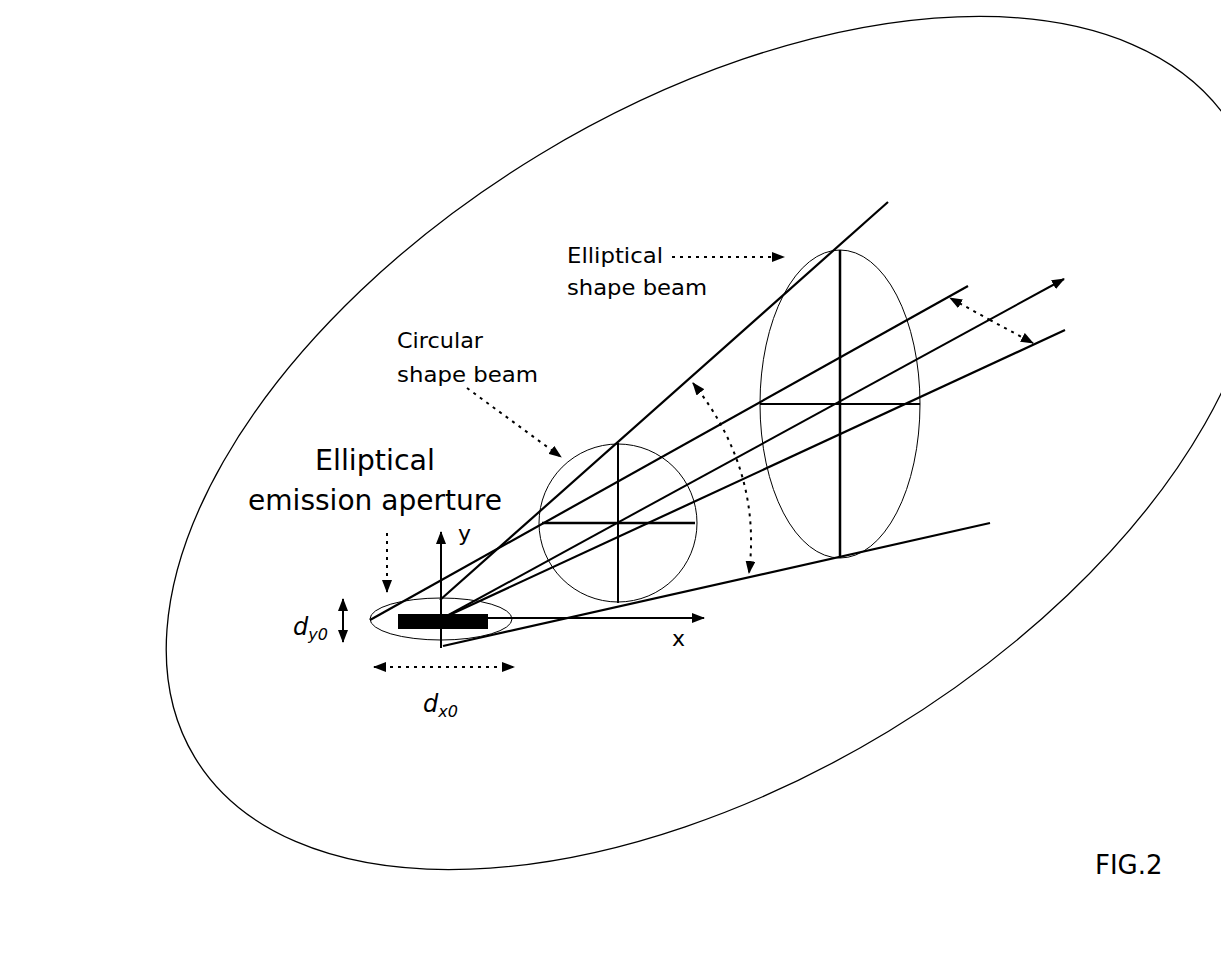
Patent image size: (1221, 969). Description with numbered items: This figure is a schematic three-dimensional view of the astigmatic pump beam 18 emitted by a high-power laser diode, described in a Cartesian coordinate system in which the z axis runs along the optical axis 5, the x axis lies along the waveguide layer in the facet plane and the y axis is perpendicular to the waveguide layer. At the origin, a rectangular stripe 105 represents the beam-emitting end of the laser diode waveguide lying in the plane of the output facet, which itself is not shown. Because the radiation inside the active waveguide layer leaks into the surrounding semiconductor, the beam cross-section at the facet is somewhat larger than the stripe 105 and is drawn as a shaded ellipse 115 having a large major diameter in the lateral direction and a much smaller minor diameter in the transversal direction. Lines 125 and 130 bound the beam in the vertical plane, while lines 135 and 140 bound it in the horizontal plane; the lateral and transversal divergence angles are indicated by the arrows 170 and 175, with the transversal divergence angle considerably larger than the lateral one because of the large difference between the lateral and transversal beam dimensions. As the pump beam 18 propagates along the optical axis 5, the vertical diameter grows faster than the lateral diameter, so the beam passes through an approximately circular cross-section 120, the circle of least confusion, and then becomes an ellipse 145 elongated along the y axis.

The pump beam 18 is at (598, 121).
The optical axis 5 is at (1034, 291).
The rectangular stripe 105 is at (503, 638).
The shaded ellipse 115 is at (380, 638).
The circular crossection 120 is at (685, 556).
The upper vertical beam boundary 125 is at (855, 230).
The lower vertical beam boundary 130 is at (950, 539).
The left horizontal beam boundary 135 is at (921, 309).
The right horizontal beam boundary 140 is at (1063, 336).
The ellipse elongated along the y axis 145 is at (913, 466).
The arrow indicating divergence angle θx 170 is at (990, 323).
The arrow indicating divergence angle θy 175 is at (708, 410).